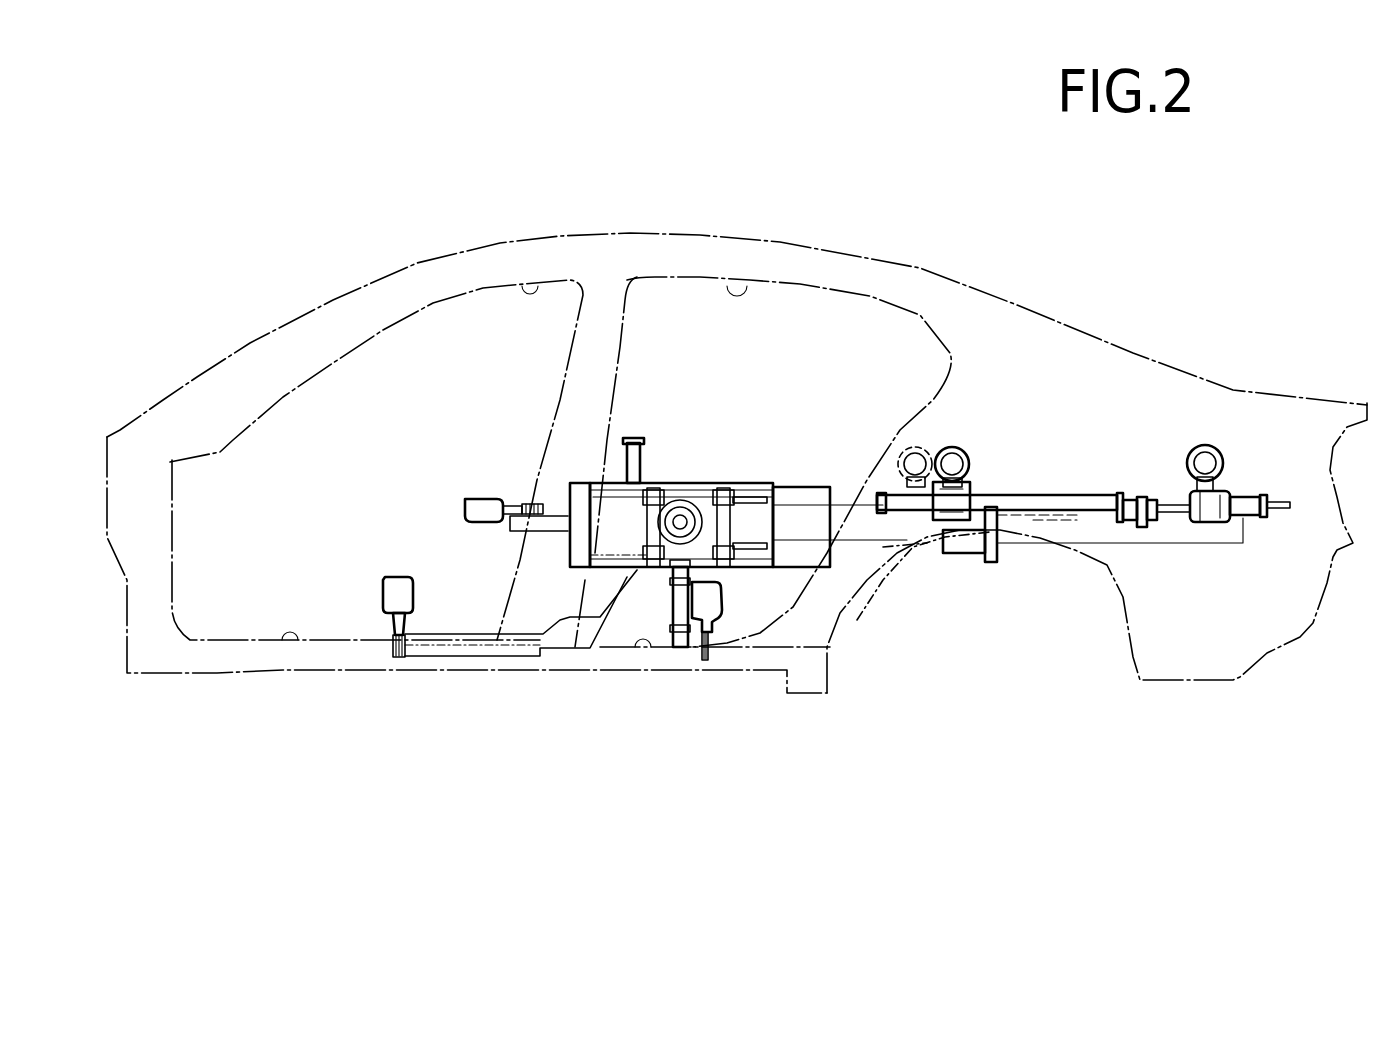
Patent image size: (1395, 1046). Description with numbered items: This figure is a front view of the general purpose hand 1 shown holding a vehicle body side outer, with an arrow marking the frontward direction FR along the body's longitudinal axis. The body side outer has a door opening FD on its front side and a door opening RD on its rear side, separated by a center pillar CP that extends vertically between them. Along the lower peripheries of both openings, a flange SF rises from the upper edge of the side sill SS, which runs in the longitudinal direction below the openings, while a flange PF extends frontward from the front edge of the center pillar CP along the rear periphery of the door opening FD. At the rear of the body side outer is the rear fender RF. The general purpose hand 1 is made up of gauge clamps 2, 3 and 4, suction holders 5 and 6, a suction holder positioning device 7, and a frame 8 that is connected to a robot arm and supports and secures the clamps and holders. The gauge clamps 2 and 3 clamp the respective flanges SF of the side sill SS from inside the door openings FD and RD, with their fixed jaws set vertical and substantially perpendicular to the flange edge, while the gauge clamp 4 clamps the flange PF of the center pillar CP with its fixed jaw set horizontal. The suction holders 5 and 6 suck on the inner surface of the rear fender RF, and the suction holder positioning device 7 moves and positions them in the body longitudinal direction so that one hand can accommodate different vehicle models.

The general purpose hand 1 is at (780, 455).
The gauge clamp 2 is at (368, 576).
The gauge clamp 3 is at (730, 627).
The gauge clamp 4 is at (468, 483).
The suction holder 5 is at (957, 433).
The suction holder 6 is at (1222, 430).
The suction holder positioning device 7 is at (1008, 480).
The frame 8 is at (645, 505).
The door opening FD is at (537, 280).
The door opening RD is at (753, 280).
The center pillar CP is at (583, 377).
The flange PF is at (553, 430).
The rear fender RF is at (1122, 372).
The flange SF is at (282, 647).
The side sill SS is at (563, 663).
The front direction FR is at (613, 853).